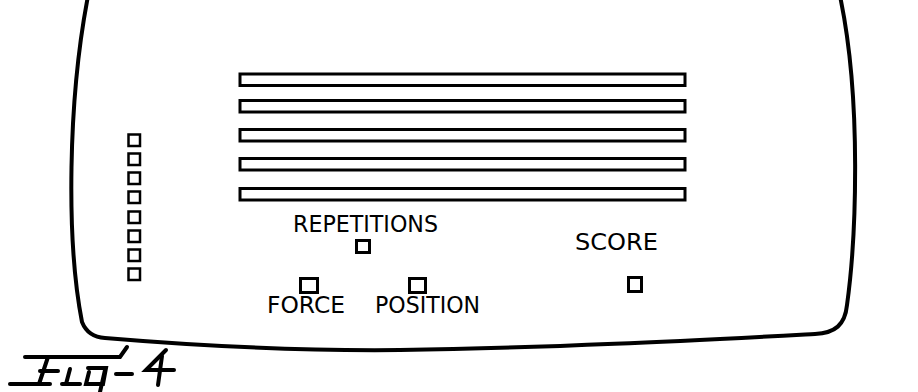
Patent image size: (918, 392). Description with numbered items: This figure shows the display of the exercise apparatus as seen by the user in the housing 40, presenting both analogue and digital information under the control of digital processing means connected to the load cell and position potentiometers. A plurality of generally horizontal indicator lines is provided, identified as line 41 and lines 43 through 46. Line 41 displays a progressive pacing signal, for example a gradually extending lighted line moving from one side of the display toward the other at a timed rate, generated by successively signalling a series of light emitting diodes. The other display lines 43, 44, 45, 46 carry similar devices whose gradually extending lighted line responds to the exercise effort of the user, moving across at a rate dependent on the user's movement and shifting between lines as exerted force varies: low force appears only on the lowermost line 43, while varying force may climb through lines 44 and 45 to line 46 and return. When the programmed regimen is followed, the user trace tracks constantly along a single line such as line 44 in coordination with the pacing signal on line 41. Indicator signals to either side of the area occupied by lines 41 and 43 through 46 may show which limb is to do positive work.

The housing 40 is at (772, 344).
The indicator line 41 is at (685, 130).
The indicator line 43 is at (685, 201).
The indicator line 44 is at (685, 171).
The indicator line 45 is at (685, 101).
The indicator line 46 is at (685, 75).